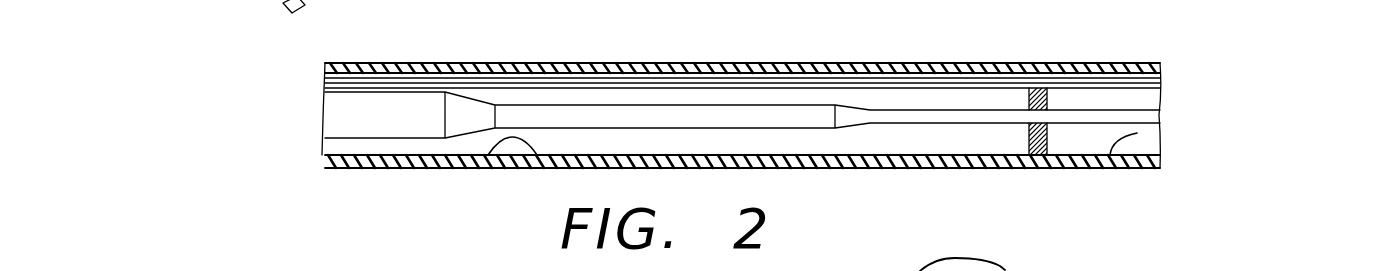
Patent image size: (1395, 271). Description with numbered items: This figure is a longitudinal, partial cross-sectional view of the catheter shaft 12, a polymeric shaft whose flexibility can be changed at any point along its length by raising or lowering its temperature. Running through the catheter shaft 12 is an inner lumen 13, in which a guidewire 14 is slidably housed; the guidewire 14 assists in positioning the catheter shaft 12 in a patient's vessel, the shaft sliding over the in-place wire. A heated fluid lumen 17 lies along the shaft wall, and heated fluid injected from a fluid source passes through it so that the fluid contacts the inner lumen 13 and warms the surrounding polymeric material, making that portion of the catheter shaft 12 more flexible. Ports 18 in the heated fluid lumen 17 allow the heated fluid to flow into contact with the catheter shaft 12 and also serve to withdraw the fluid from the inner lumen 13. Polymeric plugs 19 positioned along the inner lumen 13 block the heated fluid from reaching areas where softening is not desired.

The catheter shaft 12 is at (658, 63).
The inner lumen 13 is at (503, 142).
The guidewire 14 is at (283, 3).
The heated fluid lumen 17 is at (520, 86).
The port 18 is at (1073, 92).
The polymeric plug 19 is at (1050, 135).